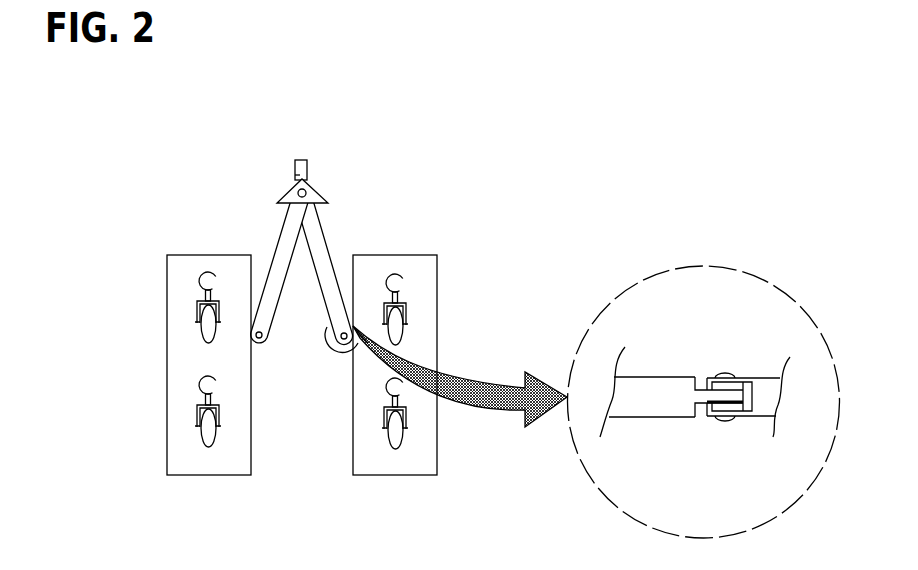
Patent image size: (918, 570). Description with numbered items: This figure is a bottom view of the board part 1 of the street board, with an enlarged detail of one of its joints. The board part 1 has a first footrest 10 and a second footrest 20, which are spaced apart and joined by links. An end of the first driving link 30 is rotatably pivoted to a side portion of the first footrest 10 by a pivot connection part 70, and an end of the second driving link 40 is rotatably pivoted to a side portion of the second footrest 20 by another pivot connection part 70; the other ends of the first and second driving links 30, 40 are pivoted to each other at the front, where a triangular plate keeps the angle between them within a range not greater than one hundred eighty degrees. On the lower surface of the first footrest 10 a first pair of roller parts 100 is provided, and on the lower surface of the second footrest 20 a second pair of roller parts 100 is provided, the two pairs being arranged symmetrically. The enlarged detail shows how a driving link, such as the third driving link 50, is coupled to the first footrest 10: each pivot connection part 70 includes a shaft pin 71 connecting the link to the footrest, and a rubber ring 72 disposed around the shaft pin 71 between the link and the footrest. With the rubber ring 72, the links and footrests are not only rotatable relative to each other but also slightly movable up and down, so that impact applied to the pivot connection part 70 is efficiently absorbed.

The board part 1 is at (249, 133).
The first footrest 10 is at (431, 463).
The second footrest 20 is at (171, 462).
The first driving link 30 is at (323, 248).
The second driving link 40 is at (278, 258).
The third driving link 50 is at (645, 410).
The pivot connection part 70 is at (330, 328).
The shaft pin 71 is at (725, 375).
The rubber ring 72 is at (713, 385).
The roller part 100 is at (188, 313).